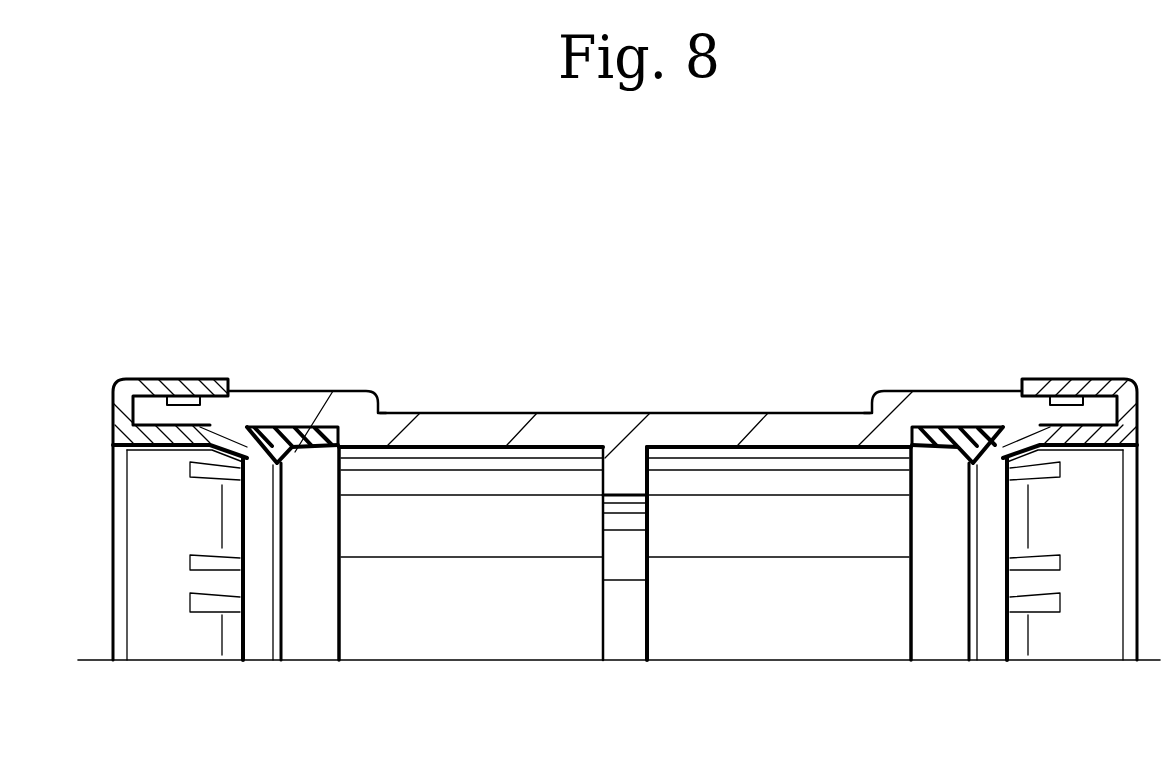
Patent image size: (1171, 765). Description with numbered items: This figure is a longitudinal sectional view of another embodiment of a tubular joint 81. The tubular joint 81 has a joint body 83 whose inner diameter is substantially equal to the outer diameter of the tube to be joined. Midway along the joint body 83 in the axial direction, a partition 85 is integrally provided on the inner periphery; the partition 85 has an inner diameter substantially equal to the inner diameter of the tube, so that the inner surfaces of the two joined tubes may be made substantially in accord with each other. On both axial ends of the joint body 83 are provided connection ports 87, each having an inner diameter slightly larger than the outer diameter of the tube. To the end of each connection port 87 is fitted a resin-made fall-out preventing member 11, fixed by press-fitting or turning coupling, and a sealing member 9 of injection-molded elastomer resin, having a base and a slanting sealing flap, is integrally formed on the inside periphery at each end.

The tubular joint 81 is at (843, 252).
The resin-made fall-out preventing member 11 is at (150, 378).
The sealing member 9 is at (273, 427).
The connection port 87 is at (354, 391).
The joint body 83 is at (543, 423).
The partition 85 is at (630, 460).